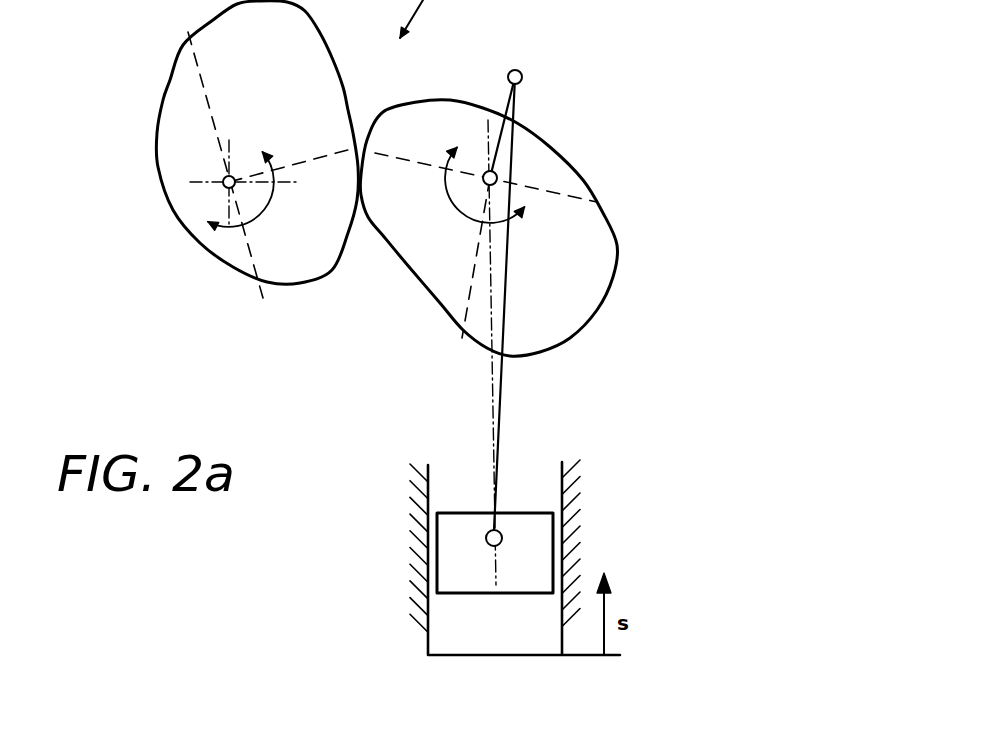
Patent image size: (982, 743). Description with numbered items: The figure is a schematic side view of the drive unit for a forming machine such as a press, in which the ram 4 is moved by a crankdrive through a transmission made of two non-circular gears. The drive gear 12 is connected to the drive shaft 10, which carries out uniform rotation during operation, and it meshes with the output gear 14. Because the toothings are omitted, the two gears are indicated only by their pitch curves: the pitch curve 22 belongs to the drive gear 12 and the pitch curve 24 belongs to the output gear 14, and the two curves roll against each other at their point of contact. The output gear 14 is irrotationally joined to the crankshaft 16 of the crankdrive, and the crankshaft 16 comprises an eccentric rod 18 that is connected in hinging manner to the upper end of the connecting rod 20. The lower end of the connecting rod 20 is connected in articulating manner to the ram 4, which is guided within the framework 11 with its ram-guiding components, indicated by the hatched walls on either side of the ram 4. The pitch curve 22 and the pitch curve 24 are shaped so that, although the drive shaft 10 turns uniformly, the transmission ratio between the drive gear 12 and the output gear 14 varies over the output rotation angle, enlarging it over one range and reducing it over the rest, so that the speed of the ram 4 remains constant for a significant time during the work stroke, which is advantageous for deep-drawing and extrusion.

The pitch curve 22 is at (163, 103).
The drive shaft 10 is at (223, 178).
The drive gear 12 is at (180, 203).
The pitch curve 24 is at (618, 273).
The output gear 14 is at (415, 265).
The crankshaft 16 is at (497, 173).
The eccentric rod 18 is at (503, 97).
The connecting rod 20 is at (503, 392).
The framework 11 is at (568, 490).
The ram 4 is at (447, 562).